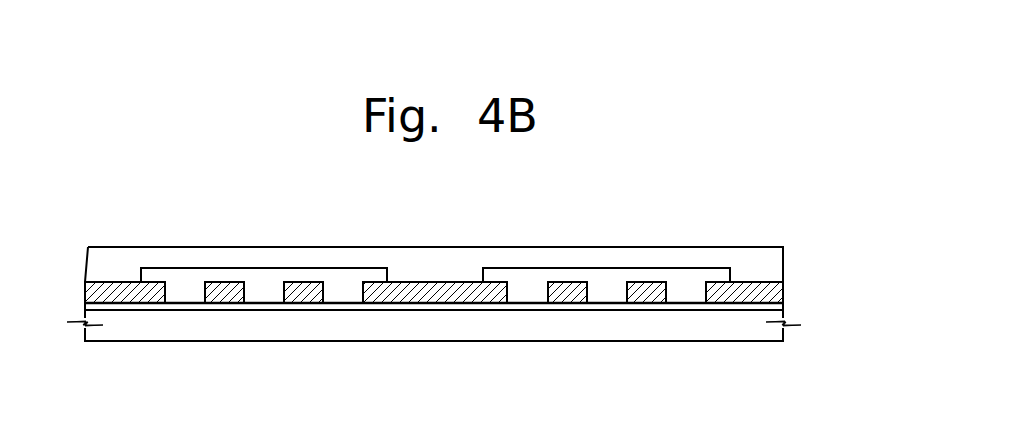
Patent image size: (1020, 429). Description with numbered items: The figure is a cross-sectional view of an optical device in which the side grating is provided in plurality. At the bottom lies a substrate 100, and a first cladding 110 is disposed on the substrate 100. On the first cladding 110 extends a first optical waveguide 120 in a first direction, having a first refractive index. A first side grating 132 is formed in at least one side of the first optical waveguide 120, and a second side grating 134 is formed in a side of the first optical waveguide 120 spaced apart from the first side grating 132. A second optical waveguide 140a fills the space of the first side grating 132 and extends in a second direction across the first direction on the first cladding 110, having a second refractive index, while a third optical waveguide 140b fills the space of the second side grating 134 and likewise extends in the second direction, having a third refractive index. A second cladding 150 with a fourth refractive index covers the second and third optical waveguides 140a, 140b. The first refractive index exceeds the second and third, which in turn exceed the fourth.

The substrate 100 is at (775, 333).
The first cladding 110 is at (775, 306).
The first optical waveguide 120 is at (110, 287).
The first side grating 132 is at (304, 278).
The second side grating 134 is at (646, 278).
The second optical waveguide 140a is at (347, 278).
The third optical waveguide 140b is at (529, 278).
The second cladding 150 is at (775, 262).